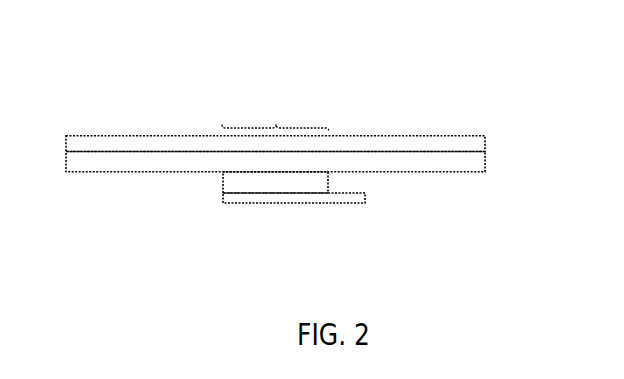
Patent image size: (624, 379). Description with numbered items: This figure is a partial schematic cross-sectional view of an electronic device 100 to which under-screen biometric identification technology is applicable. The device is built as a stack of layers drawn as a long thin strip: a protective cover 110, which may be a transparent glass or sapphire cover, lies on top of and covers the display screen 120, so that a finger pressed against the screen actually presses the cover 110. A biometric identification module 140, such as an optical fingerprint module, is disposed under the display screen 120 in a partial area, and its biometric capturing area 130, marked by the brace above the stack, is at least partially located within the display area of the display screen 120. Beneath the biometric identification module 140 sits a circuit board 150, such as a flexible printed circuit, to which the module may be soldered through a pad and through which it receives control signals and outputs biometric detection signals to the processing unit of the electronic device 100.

The electronic device 100 is at (365, 44).
The protective cover 110 is at (473, 146).
The display screen 120 is at (474, 161).
The biometric capturing area 130 is at (275, 110).
The biometric identification module 140 is at (330, 178).
The circuit board 150 is at (348, 198).